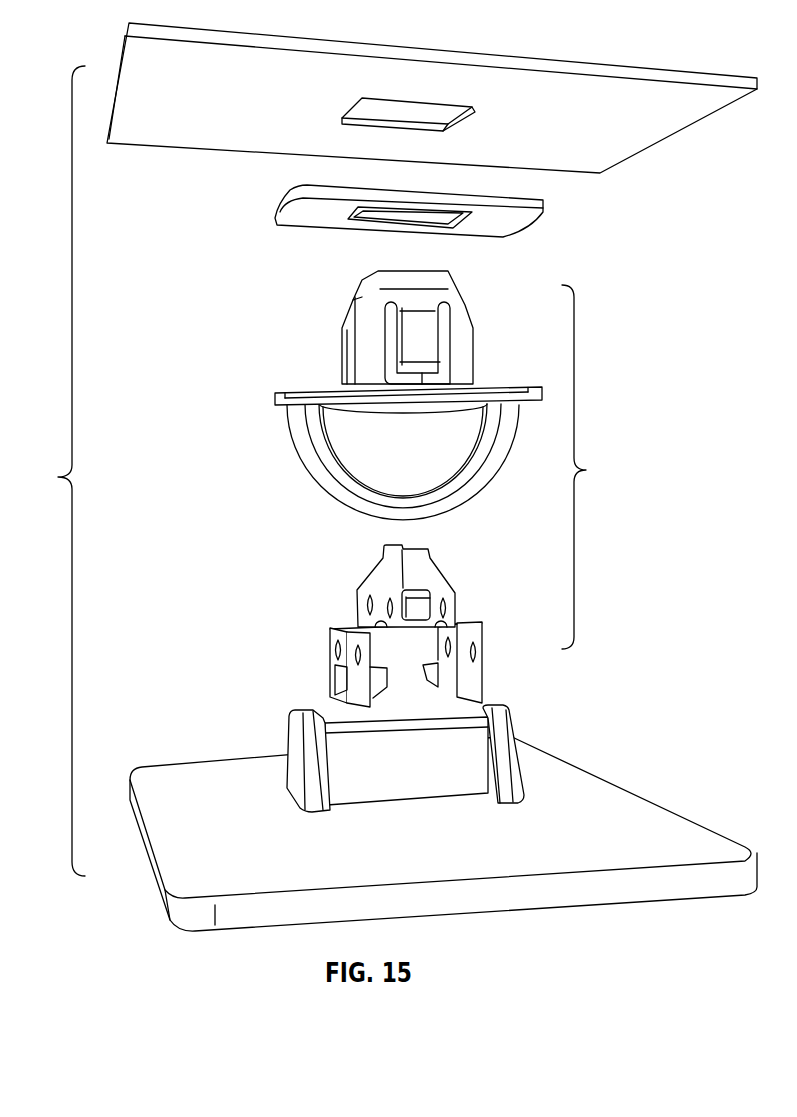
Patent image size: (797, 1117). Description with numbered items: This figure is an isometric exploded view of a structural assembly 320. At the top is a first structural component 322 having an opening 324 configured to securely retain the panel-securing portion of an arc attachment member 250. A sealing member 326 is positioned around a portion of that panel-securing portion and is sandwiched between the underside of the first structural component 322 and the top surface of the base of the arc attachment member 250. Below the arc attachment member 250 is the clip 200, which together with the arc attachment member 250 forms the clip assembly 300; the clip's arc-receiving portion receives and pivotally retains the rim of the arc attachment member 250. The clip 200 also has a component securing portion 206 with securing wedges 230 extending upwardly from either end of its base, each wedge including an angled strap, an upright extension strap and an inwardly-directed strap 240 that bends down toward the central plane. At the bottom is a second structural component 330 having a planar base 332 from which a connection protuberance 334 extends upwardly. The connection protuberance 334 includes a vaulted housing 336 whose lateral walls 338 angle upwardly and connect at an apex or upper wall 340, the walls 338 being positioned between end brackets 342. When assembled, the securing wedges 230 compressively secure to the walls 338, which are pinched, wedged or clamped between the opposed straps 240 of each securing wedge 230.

The clip 200 is at (393, 626).
The component securing portion 206 is at (327, 657).
The securing wedge 230 is at (330, 687).
The inwardly-directed strap 240 is at (403, 663).
The arc attachment member 250 is at (276, 393).
The clip assembly 300 is at (593, 467).
The structural assembly 320 is at (48, 471).
The first structural component 322 is at (636, 152).
The opening 324 is at (393, 108).
The sealing member 326 is at (545, 213).
The second structural component 330 is at (443, 801).
The planar base 332 is at (650, 837).
The connection protuberance 334 is at (520, 720).
The vaulted housing 336 is at (500, 707).
The lateral walls 338 is at (337, 722).
The upper wall 340 is at (382, 722).
The end brackets 342 is at (290, 737).